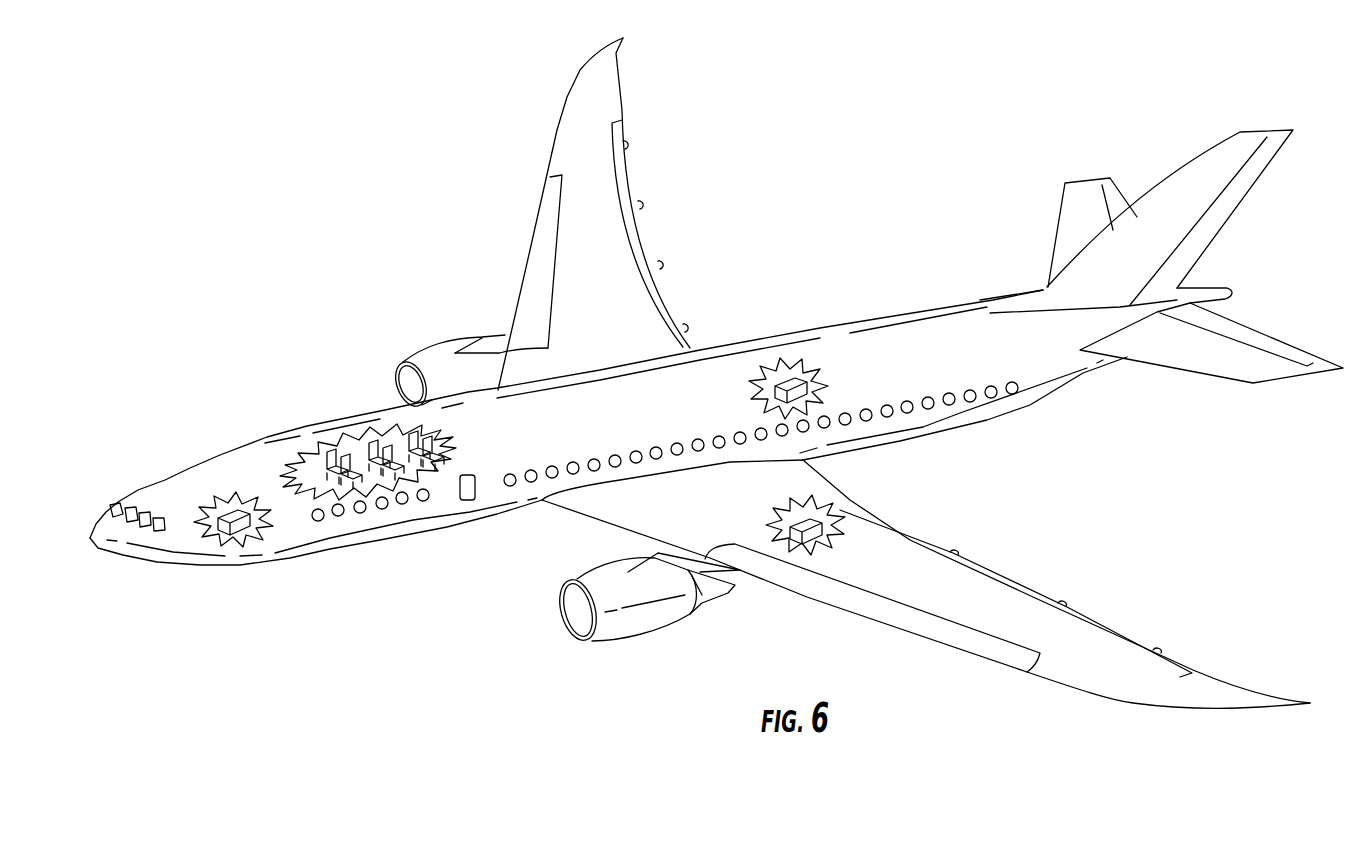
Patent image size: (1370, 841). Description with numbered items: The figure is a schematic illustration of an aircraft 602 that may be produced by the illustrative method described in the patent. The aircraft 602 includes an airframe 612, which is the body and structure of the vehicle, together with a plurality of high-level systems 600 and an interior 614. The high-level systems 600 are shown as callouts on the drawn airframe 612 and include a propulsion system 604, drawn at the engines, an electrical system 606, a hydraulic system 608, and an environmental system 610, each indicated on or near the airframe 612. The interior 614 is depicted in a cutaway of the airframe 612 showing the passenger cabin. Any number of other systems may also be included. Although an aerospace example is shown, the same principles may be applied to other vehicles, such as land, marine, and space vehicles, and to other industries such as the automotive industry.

The high-level systems 600 is at (716, 373).
The aircraft 602 is at (716, 373).
The propulsion system 604 is at (443, 360).
The electrical system 606 is at (230, 515).
The hydraulic system 608 is at (805, 520).
The environmental system 610 is at (790, 385).
The airframe 612 is at (367, 409).
The interior 614 is at (352, 468).